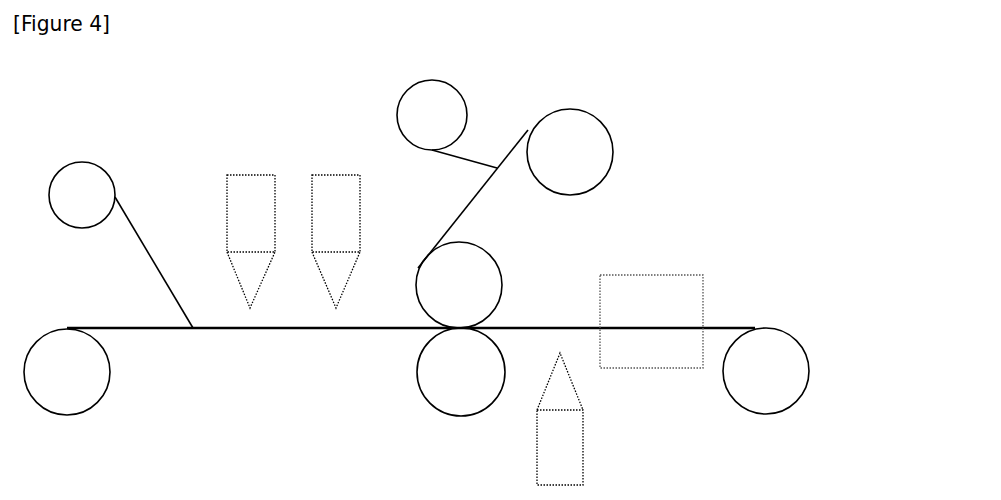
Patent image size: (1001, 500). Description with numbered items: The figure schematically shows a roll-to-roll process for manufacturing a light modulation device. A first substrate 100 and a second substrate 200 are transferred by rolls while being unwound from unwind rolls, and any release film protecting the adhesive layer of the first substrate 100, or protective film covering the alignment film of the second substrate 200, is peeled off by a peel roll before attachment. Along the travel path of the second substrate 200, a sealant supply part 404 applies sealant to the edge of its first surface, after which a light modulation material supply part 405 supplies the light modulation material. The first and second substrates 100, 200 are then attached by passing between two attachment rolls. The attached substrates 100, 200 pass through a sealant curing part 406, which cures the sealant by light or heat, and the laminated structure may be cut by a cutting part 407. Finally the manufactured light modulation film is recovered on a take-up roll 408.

The first substrate 100 is at (478, 197).
The second substrate 200 is at (140, 329).
The sealant supply part 404 is at (237, 173).
The light modulation material supply part 405 is at (337, 193).
The sealant curing part 406 is at (572, 458).
The cutting part 407 is at (680, 293).
The take-up roll 408 is at (768, 352).